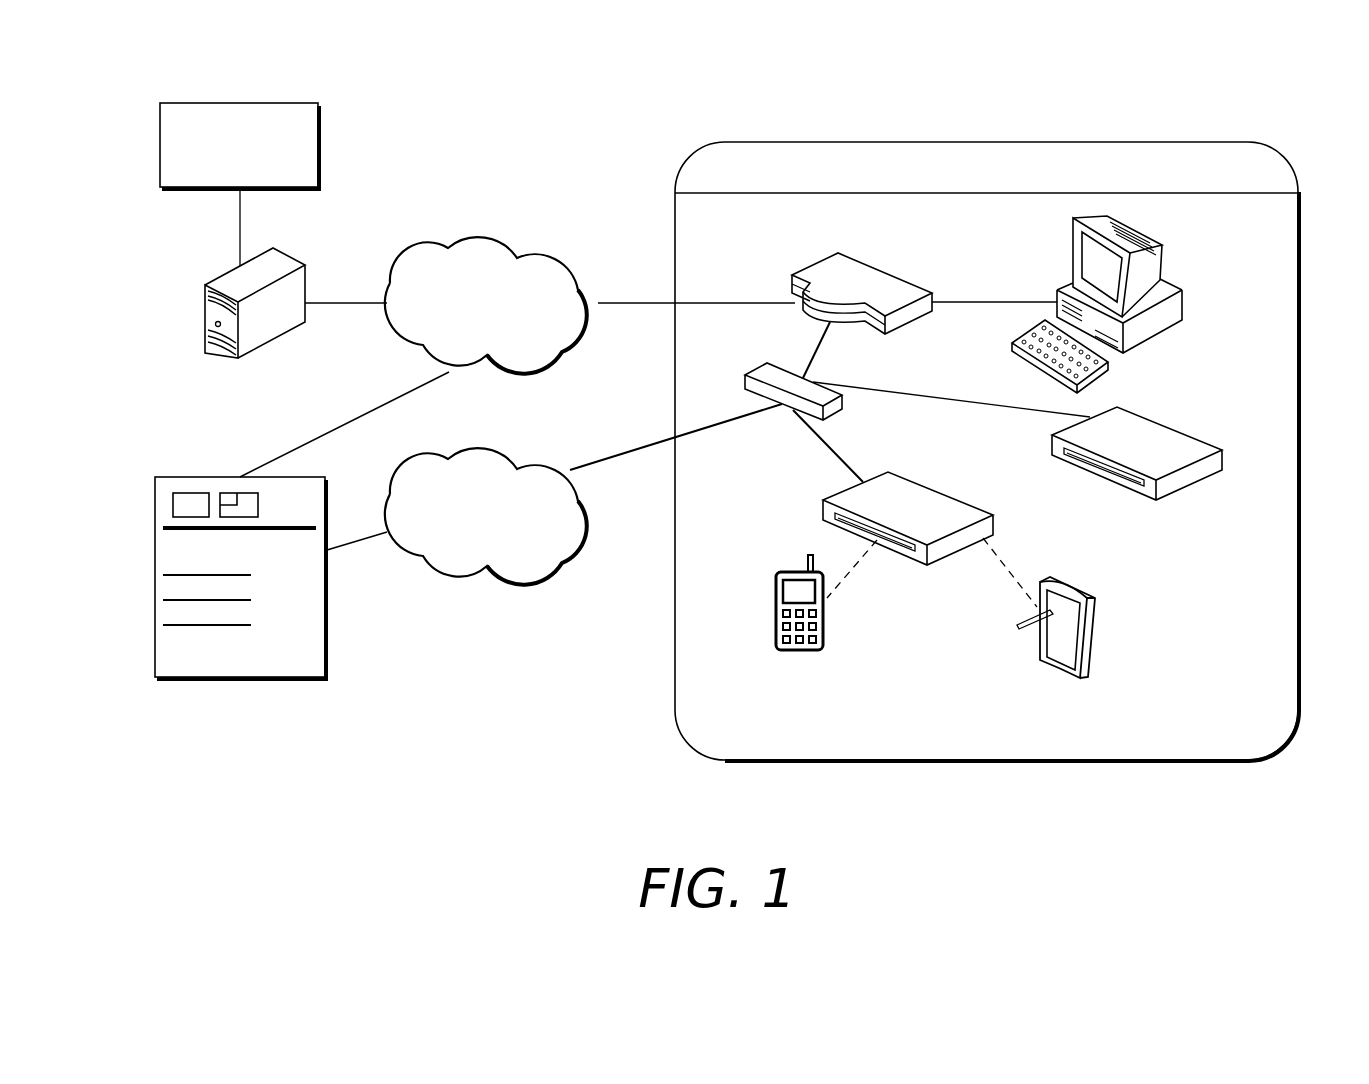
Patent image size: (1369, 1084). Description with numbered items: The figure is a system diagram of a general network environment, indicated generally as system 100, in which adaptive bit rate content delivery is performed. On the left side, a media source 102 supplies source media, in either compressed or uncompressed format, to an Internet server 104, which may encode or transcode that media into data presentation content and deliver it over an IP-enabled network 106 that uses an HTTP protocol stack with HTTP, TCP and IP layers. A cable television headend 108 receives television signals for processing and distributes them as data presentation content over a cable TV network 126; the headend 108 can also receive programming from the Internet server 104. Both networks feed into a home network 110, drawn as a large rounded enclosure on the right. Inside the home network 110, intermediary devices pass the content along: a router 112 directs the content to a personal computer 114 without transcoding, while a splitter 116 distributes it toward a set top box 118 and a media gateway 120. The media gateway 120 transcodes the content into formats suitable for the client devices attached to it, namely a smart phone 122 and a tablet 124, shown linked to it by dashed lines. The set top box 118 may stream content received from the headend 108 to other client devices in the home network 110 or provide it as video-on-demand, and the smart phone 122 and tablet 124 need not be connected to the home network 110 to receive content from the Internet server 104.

The system 100 is at (1182, 830).
The media source 102 is at (160, 142).
The Internet server 104 is at (288, 255).
The IP-enabled network 106 is at (477, 237).
The cable television headend 108 is at (155, 573).
The home network 110 is at (1080, 140).
The router 112 is at (826, 262).
The personal computer 114 is at (1187, 305).
The splitter 116 is at (783, 365).
The set top box 118 is at (1167, 425).
The media gateway 120 is at (995, 522).
The smart phone 122 is at (776, 608).
The tablet 124 is at (1097, 636).
The cable TV network 126 is at (477, 448).